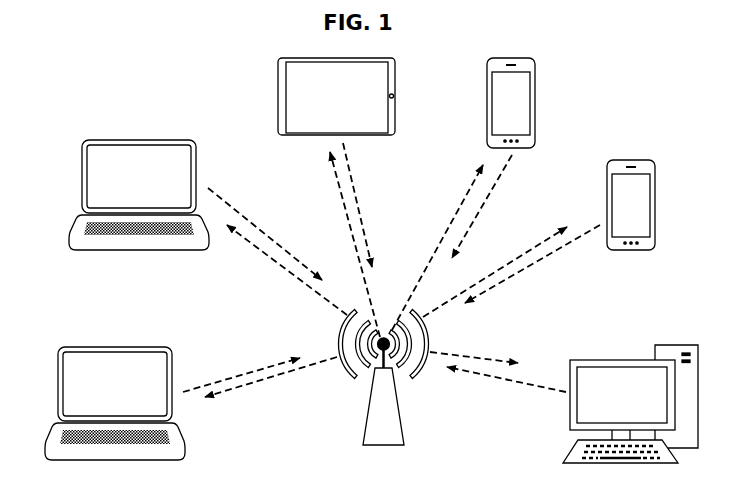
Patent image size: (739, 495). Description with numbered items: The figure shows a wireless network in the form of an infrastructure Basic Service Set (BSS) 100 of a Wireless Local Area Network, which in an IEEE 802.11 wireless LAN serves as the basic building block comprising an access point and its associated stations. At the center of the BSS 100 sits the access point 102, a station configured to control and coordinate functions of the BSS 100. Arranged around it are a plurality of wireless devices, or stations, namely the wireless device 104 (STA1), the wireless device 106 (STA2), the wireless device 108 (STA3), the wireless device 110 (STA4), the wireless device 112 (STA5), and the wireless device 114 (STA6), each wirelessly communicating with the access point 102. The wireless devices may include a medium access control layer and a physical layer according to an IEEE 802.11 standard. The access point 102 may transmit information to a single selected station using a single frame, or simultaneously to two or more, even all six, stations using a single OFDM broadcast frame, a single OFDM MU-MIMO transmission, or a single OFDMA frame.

The infrastructure Basic Service Set (BSS) 100 is at (95, 80).
The access point 102 is at (386, 446).
The wireless device (STA1) 104 is at (93, 346).
The wireless device (STA2) 106 is at (81, 178).
The wireless device (STA3) 108 is at (277, 88).
The wireless device (STA4) 110 is at (536, 93).
The wireless device (STA5) 112 is at (642, 160).
The wireless device (STA6) 114 is at (636, 359).